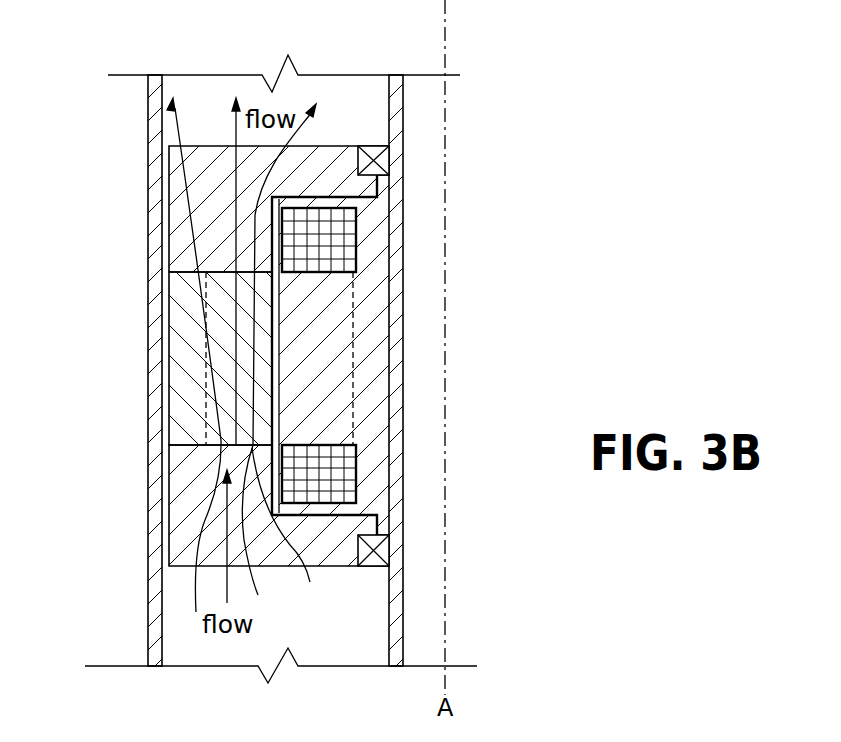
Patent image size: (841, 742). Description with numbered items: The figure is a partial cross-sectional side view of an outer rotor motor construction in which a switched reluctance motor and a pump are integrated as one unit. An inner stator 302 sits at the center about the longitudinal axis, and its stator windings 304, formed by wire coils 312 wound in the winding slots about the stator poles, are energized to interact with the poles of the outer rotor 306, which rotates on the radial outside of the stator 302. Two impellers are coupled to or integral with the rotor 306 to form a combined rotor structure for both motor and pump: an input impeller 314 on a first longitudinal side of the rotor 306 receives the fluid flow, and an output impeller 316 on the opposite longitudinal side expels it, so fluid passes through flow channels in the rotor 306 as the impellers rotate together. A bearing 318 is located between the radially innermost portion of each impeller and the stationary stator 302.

The inner stator 302 is at (392, 372).
The stator windings 304 is at (300, 512).
The outer rotor 306 is at (180, 338).
The wire coils 312 is at (330, 245).
The input impeller 314 is at (180, 505).
The output impeller 316 is at (180, 197).
The bearing 318 is at (381, 168).